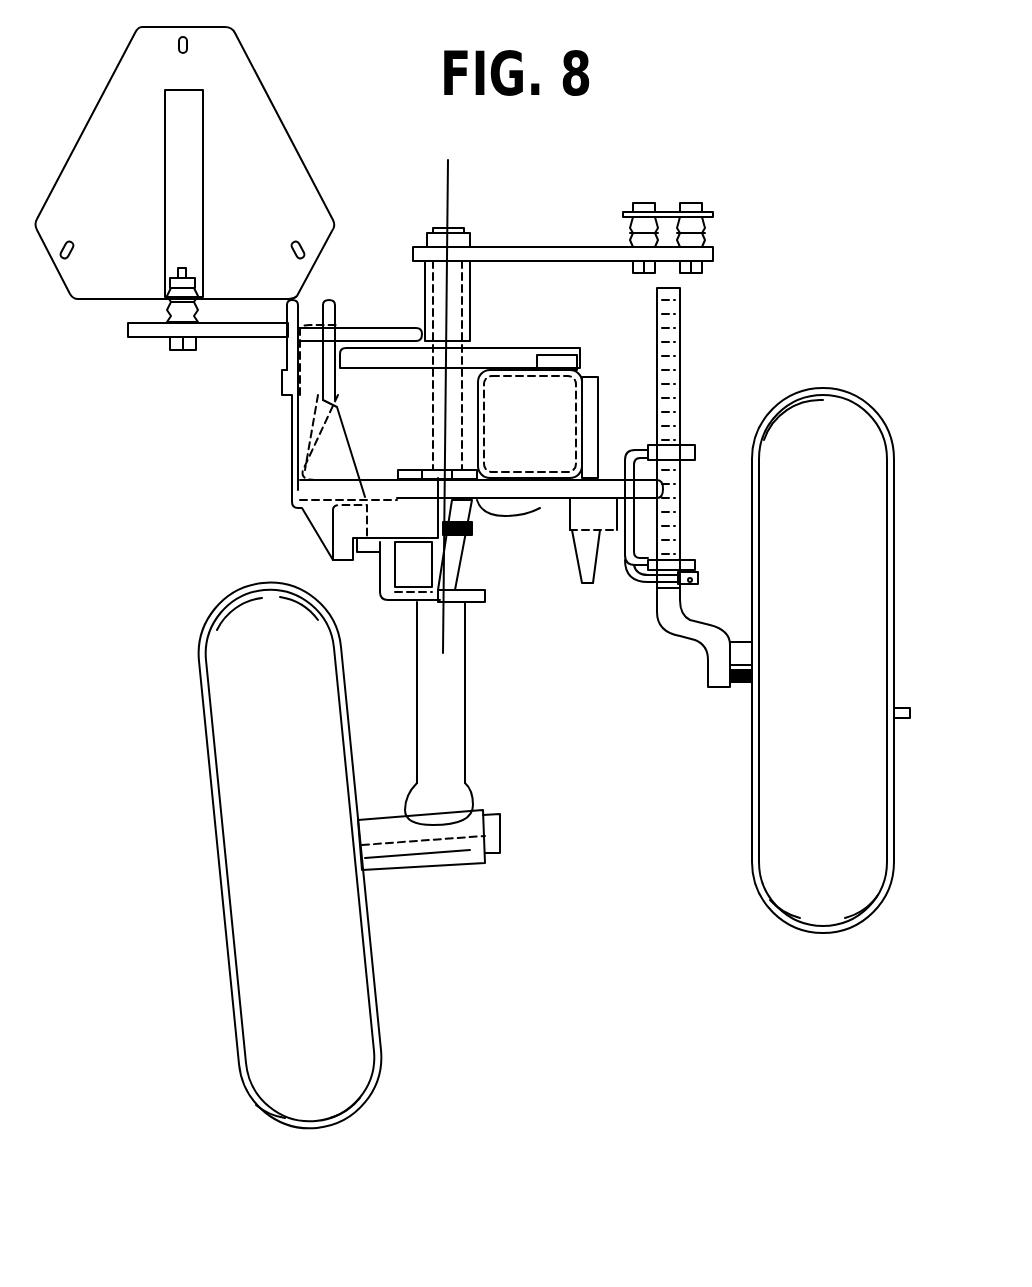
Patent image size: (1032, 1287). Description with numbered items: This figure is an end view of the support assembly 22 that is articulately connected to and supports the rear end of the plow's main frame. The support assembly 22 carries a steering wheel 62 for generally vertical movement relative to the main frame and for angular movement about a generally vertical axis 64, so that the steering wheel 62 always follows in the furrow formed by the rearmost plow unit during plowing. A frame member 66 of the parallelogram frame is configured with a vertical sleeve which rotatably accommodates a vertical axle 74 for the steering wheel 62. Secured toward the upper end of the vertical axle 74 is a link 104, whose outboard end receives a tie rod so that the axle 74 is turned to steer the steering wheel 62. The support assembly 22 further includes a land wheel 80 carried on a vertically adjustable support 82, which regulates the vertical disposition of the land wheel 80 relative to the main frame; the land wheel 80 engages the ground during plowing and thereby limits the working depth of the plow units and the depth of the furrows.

The support assembly 22 is at (233, 520).
The steering wheel 62 is at (358, 962).
The vertical axis 64 is at (448, 208).
The forward frame member 66 is at (432, 435).
The vertical axle 74 is at (455, 312).
The land wheel 80 is at (845, 435).
The vertically adjustable support 82 is at (668, 355).
The link 104 is at (143, 330).